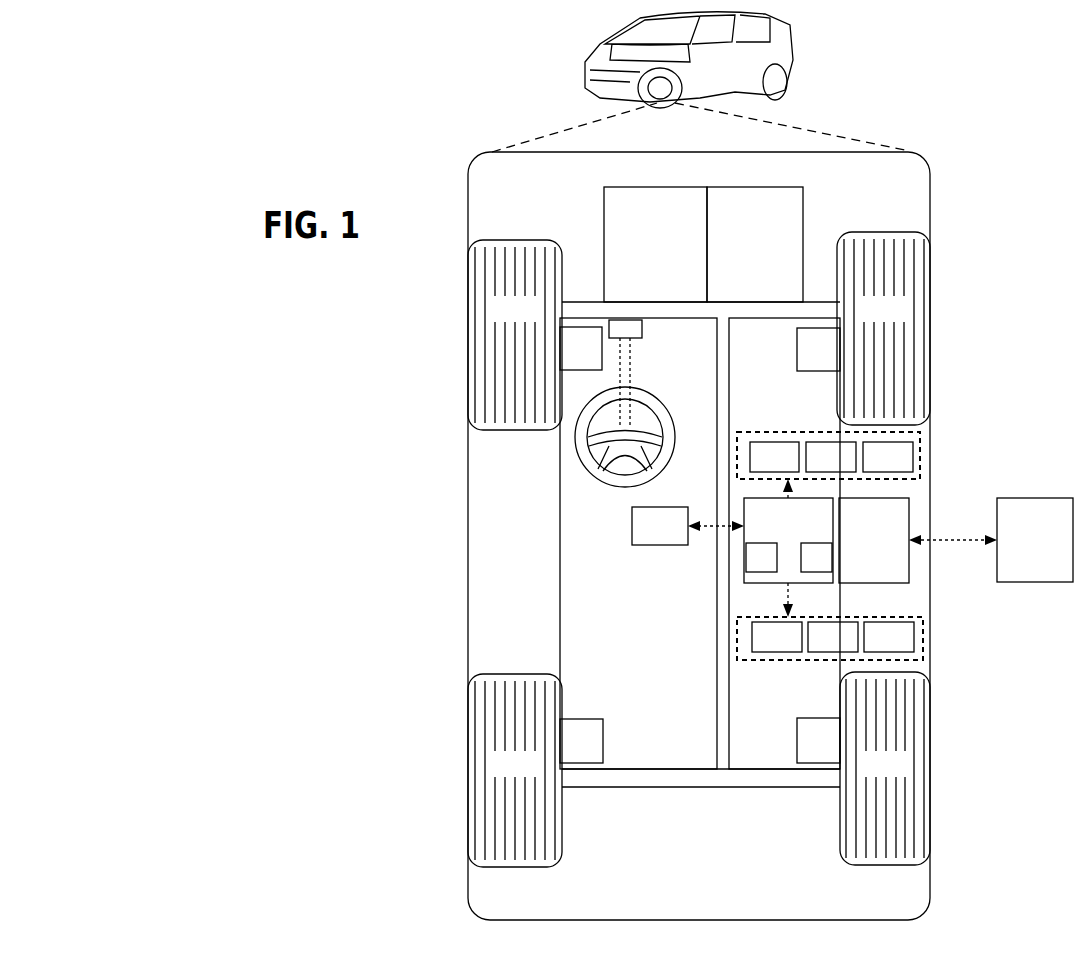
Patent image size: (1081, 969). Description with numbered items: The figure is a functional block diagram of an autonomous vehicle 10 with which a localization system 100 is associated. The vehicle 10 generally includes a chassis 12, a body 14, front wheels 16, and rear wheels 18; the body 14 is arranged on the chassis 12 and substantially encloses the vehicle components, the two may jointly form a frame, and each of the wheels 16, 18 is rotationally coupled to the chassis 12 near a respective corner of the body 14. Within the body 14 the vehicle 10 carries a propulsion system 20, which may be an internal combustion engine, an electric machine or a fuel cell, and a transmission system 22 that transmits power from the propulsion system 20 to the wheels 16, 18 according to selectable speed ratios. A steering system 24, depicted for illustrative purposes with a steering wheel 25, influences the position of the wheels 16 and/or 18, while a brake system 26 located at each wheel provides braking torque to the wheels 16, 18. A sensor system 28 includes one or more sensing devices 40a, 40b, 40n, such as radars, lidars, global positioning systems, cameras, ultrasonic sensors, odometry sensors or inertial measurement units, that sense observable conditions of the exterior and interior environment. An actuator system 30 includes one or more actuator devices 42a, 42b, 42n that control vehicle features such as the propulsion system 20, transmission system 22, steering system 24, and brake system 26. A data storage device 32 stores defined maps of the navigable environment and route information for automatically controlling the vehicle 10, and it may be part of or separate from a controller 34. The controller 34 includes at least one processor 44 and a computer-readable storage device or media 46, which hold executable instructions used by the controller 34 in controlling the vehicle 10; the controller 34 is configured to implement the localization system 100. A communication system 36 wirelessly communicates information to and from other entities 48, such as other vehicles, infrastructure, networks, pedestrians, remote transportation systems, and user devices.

The vehicle 10 is at (572, 60).
The localization system 100 is at (958, 372).
The chassis 12 is at (725, 788).
The body 14 is at (468, 497).
The front wheels 16 is at (497, 322).
The rear wheels 18 is at (499, 777).
The propulsion system 20 is at (642, 256).
The transmission system 22 is at (742, 256).
The steering system 24 is at (598, 500).
The steering wheel 25 is at (662, 402).
The brake system 26 is at (568, 358).
The sensor system 28 is at (785, 432).
The actuator system 30 is at (770, 661).
The data storage device 32 is at (647, 539).
The controller 34 is at (775, 541).
The communication system 36 is at (861, 552).
The sensing device 40a is at (755, 469).
The sensing device 40b is at (811, 469).
The sensing device 40n is at (868, 469).
The actuator device 42a is at (757, 649).
The actuator device 42b is at (813, 649).
The actuator device 42n is at (869, 649).
The processor 44 is at (748, 569).
The computer-readable storage device or media 46 is at (804, 569).
The other entities 48 is at (1022, 552).